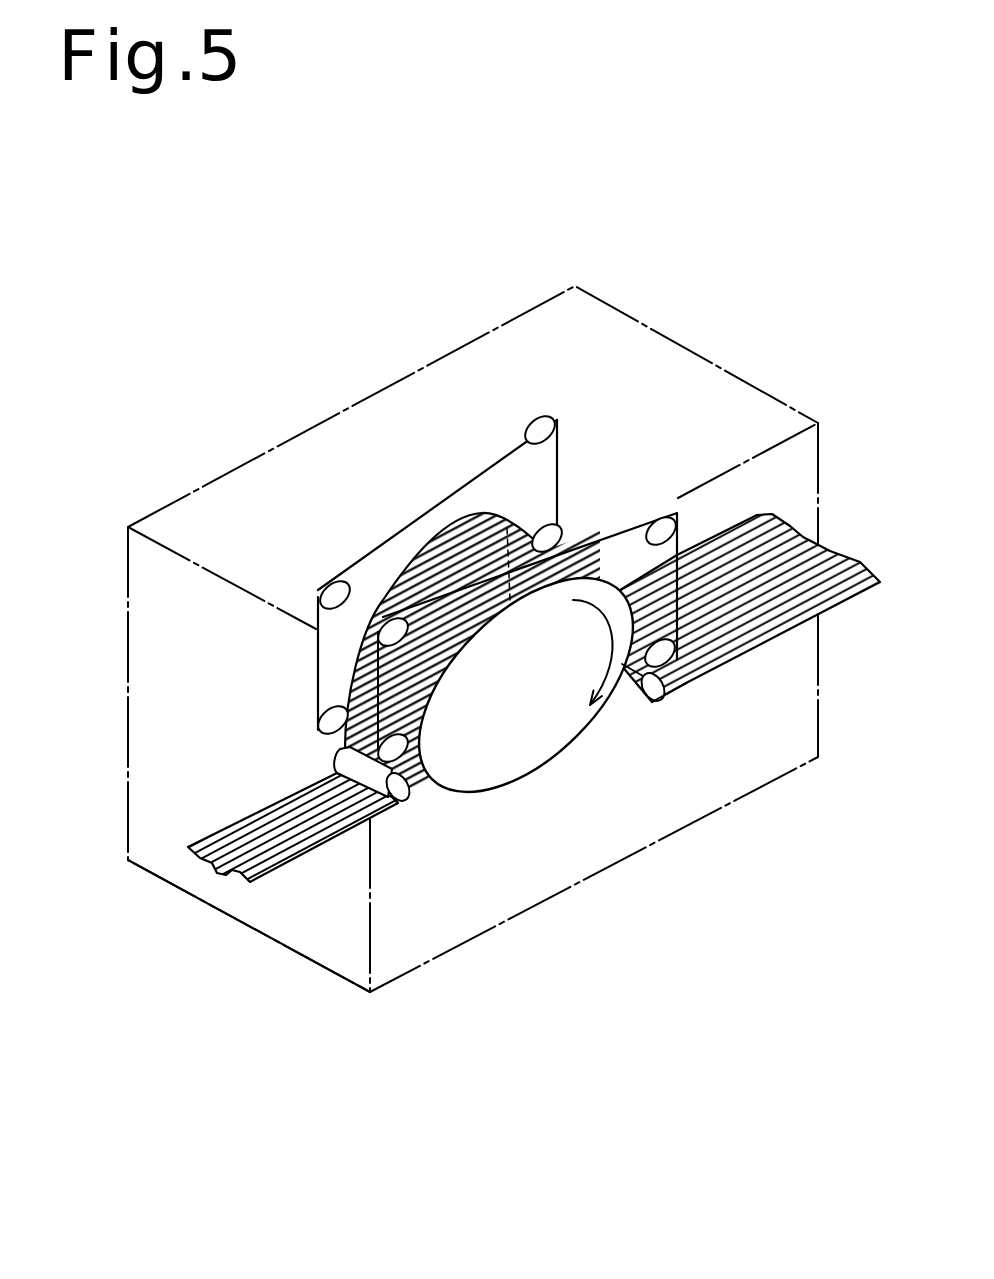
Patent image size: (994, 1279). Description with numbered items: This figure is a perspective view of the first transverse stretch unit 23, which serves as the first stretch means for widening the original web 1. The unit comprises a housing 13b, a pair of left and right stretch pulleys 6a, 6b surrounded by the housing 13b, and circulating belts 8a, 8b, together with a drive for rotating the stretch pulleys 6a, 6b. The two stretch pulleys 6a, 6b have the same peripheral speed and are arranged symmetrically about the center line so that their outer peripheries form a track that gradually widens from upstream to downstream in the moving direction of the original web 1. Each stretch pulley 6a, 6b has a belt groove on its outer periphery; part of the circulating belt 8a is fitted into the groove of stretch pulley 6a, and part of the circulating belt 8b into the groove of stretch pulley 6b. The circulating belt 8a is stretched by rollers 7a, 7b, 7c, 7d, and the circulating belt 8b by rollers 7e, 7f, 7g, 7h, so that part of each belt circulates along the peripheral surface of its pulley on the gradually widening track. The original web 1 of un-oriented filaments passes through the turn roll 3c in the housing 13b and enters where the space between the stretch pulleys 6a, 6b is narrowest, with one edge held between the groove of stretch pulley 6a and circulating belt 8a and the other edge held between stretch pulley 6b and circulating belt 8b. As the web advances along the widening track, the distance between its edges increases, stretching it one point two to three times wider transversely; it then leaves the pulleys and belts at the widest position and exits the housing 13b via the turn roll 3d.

The first transverse stretch unit 23 is at (405, 352).
The original web 1 is at (256, 855).
The turn roll 3c is at (405, 797).
The turn roll 3d is at (653, 700).
The stretch pulley 6a is at (547, 747).
The stretch pulley 6b is at (402, 580).
The roller 7a is at (415, 775).
The roller 7b is at (386, 618).
The roller 7c is at (665, 520).
The roller 7d is at (690, 682).
The roller 7e is at (317, 728).
The roller 7f is at (325, 593).
The roller 7g is at (540, 418).
The roller 7h is at (552, 538).
The circulating belt 8a is at (622, 522).
The circulating belt 8b is at (434, 504).
The housing 13b is at (352, 980).